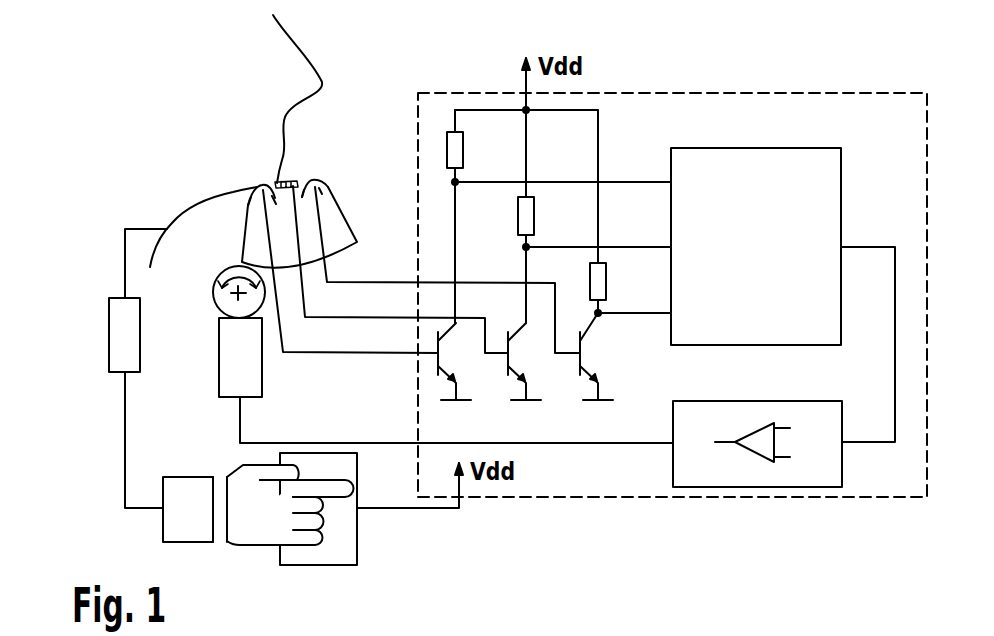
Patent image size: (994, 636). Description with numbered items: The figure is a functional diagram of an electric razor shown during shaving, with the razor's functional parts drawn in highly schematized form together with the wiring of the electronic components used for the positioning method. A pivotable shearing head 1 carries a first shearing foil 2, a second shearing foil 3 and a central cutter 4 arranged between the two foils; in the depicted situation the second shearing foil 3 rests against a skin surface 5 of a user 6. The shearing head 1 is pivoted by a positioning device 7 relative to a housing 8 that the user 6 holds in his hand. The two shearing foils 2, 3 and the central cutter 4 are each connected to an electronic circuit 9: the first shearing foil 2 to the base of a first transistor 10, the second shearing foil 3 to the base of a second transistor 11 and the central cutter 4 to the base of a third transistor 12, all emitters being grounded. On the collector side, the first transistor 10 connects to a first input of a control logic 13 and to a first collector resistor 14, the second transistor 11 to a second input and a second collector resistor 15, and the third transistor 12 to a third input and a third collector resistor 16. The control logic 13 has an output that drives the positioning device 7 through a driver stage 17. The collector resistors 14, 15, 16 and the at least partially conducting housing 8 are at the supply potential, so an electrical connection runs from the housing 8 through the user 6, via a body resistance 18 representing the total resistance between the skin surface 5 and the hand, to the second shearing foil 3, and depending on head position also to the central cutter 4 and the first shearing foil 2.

The shearing head 1 is at (343, 215).
The first shearing foil 2 is at (320, 180).
The second shearing foil 3 is at (247, 190).
The central cutter 4 is at (292, 180).
The skin surface 5 is at (273, 182).
The user 6 is at (273, 62).
The positioning device 7 is at (243, 362).
The housing 8 is at (342, 538).
The electronic circuit 9 is at (590, 475).
The first transistor 10 is at (585, 350).
The second transistor 11 is at (443, 350).
The third transistor 12 is at (513, 350).
The control logic 13 is at (756, 172).
The first collector resistor 14 is at (606, 282).
The second collector resistor 15 is at (463, 148).
The third collector resistor 16 is at (534, 217).
The driver stage 17 is at (740, 470).
The body resistance 18 is at (125, 332).